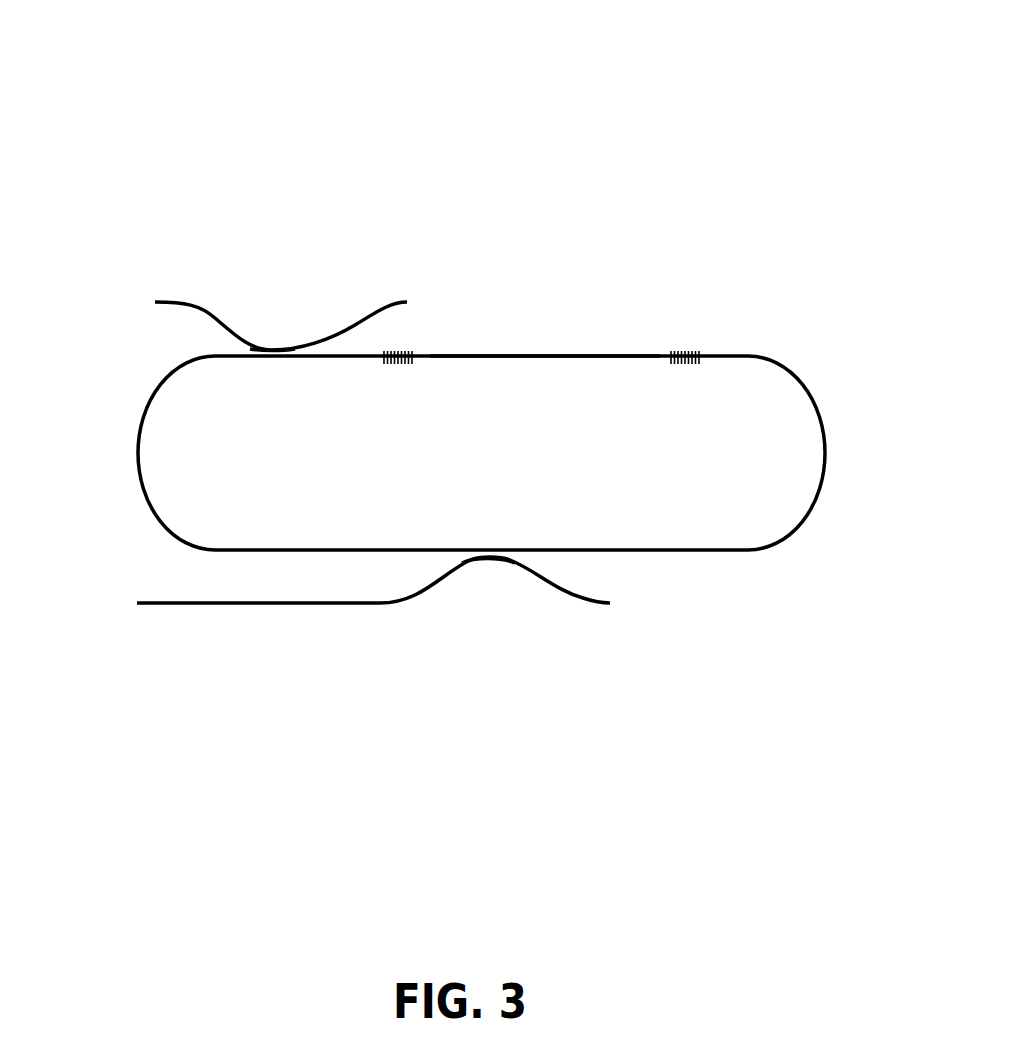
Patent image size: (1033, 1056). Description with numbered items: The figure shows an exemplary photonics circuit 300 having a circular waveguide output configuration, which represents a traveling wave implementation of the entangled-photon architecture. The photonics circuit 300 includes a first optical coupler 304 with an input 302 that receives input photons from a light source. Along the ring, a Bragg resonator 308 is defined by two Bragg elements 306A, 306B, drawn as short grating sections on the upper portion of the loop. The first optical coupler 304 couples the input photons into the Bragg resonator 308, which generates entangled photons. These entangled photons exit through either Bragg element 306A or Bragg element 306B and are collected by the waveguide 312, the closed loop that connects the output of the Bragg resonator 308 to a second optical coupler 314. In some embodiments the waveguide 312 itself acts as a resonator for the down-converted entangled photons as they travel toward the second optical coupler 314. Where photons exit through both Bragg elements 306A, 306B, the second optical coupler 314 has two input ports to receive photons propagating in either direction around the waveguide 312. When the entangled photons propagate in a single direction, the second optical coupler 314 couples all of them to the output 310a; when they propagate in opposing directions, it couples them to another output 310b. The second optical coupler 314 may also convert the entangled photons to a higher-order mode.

The photonics circuit 300 is at (108, 112).
The input 302 is at (168, 302).
The first optical coupler 304 is at (276, 350).
The Bragg element 306A is at (412, 357).
The Bragg element 306B is at (695, 357).
The Bragg resonator 308 is at (550, 357).
The output 310a is at (162, 607).
The output 310b is at (608, 605).
The waveguide 312 is at (139, 453).
The second optical coupler 314 is at (488, 562).